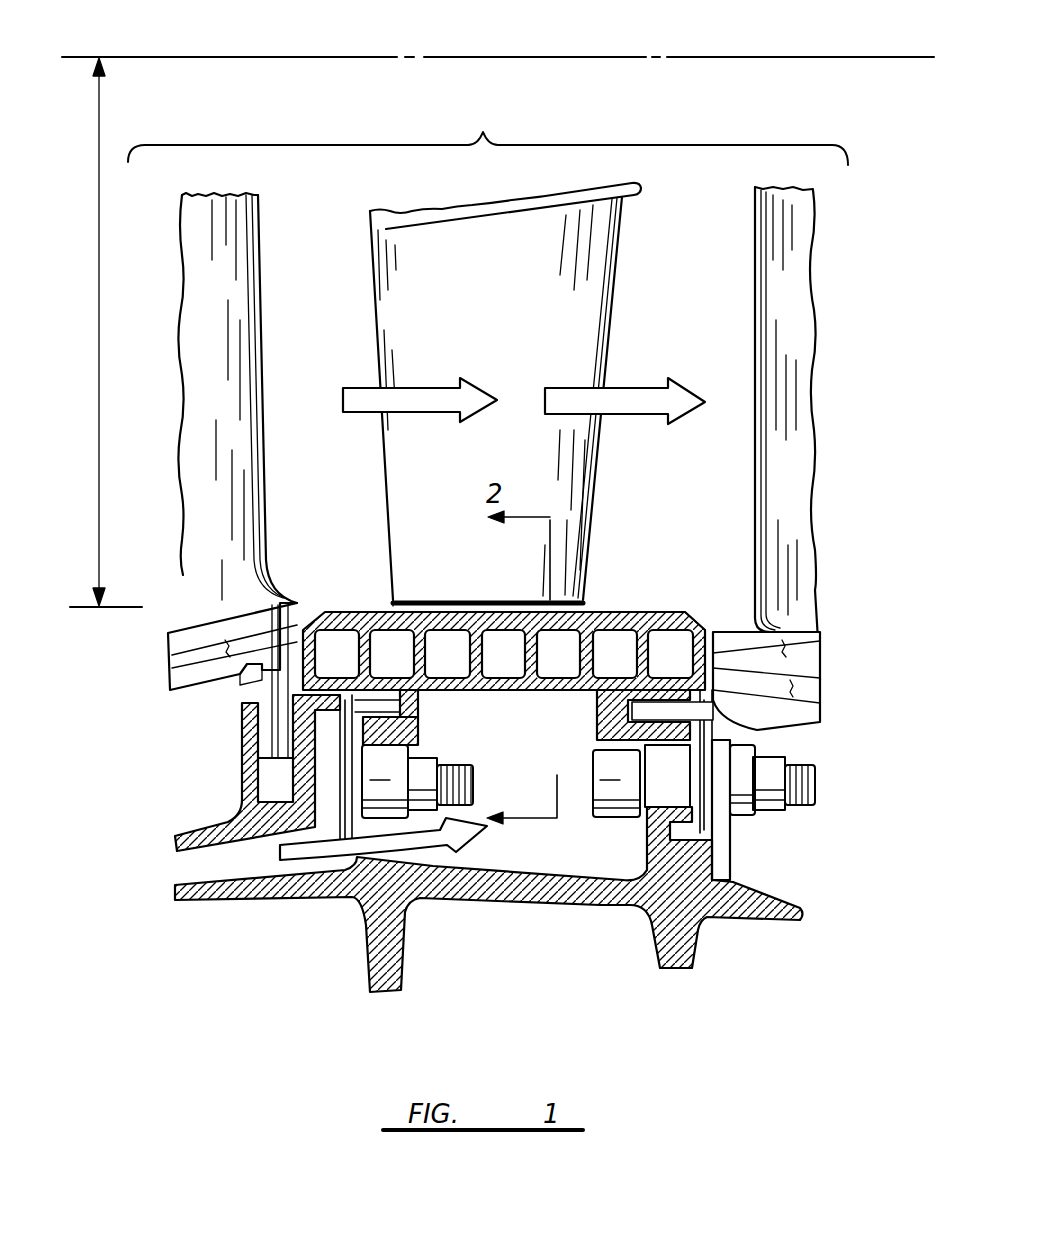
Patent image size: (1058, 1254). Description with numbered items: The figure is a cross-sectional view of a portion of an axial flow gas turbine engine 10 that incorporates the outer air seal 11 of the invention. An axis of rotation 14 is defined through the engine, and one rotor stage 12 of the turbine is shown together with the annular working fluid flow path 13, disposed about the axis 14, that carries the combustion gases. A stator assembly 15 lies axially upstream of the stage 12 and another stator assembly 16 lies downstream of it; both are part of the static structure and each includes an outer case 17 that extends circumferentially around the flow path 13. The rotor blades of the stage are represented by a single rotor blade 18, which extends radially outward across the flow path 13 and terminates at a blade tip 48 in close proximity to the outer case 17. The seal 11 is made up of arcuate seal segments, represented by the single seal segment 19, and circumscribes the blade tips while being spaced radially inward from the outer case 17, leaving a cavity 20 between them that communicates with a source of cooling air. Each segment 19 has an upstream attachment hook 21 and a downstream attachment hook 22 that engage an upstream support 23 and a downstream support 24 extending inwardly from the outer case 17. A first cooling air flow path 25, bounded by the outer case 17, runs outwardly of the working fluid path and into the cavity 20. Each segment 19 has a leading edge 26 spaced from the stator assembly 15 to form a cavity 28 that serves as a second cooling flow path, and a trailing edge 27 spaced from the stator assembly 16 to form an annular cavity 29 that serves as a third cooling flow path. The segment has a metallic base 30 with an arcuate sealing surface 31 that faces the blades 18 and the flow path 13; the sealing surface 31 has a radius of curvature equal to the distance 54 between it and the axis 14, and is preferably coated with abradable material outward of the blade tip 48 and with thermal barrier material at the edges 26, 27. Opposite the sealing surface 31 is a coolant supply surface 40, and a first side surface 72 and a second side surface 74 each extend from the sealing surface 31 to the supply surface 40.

The axial flow gas turbine engine 10 is at (247, 948).
The outer air seal 11 is at (623, 607).
The rotor stage 12 is at (488, 131).
The working fluid flow path 13 is at (423, 386).
The axis of rotation 14 is at (230, 57).
The upstream stator assembly 15 is at (188, 537).
The downstream stator assembly 16 is at (798, 437).
The outer case 17 is at (697, 940).
The rotor blade 18 is at (600, 283).
The seal segment 19 is at (656, 612).
The cavity 20 is at (582, 850).
The upstream attachment hook 21 is at (418, 733).
The downstream attachment hook 22 is at (602, 723).
The upstream support 23 is at (373, 705).
The downstream support 24 is at (670, 706).
The first cooling air flow path 25 is at (329, 838).
The leading edge 26 is at (314, 615).
The trailing edge 27 is at (702, 612).
The cavity 28 is at (297, 677).
The annular cavity 29 is at (712, 678).
The metallic base 30 is at (496, 604).
The arcuate sealing surface 31 is at (360, 600).
The coolant supply surface 40 is at (492, 690).
The blade tip 48 is at (544, 600).
The distance 54 is at (99, 297).
The first side surface 72 is at (297, 642).
The second side surface 74 is at (712, 650).